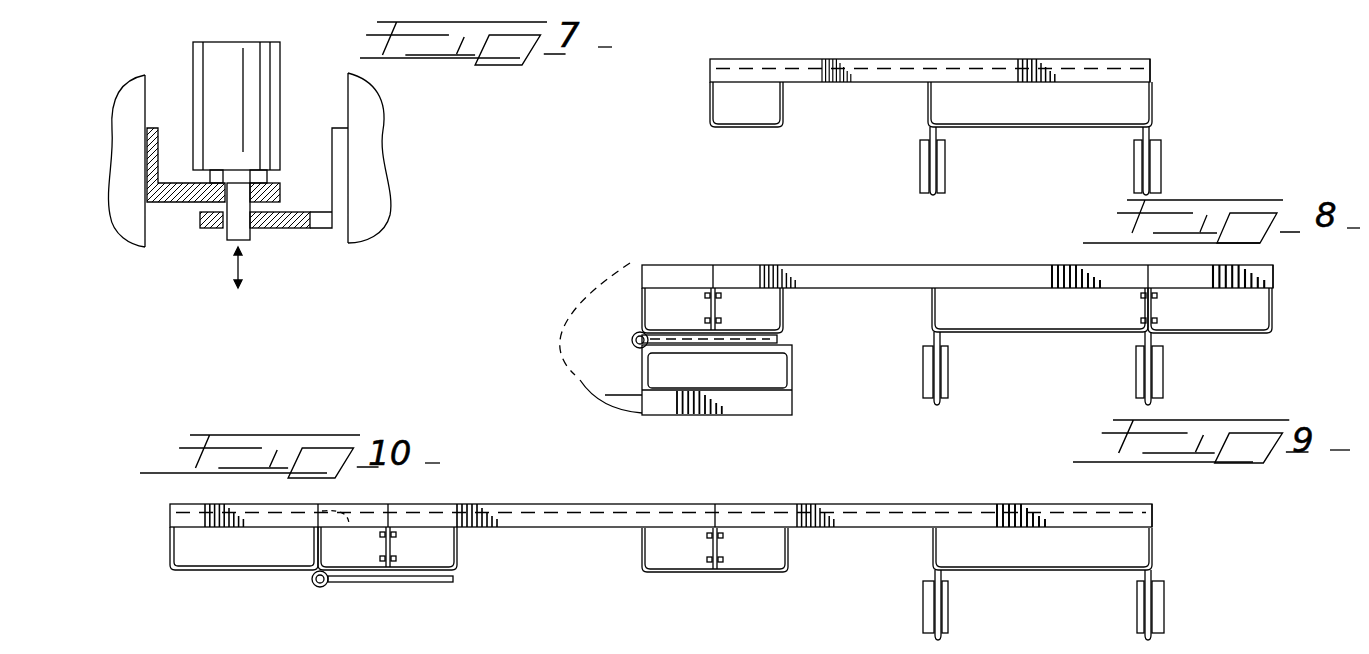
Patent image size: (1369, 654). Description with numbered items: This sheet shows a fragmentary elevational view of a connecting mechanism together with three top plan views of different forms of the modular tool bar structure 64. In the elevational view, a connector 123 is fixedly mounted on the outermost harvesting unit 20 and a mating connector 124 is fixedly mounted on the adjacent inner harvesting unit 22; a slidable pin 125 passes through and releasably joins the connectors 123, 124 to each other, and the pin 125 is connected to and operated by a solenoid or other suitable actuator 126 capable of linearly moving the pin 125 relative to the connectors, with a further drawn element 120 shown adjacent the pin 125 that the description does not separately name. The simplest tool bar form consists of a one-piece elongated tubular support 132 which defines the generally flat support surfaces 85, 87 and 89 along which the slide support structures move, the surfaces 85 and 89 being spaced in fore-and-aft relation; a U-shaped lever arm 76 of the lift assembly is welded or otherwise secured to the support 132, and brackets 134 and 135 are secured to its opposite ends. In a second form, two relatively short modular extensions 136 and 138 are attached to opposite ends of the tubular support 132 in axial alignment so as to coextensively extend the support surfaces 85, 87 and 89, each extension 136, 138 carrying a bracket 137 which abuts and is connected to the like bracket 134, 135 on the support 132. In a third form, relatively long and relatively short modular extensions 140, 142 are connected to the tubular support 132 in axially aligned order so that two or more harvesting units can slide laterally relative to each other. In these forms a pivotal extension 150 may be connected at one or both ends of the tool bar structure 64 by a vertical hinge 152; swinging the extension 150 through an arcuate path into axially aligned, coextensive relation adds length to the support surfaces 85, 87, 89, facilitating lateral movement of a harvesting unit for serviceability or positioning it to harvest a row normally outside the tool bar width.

In FIG. 7, the outermost harvesting unit 20 is at (132, 203).
In FIG. 7, the adjacent inner harvesting unit 22 is at (360, 192).
In FIG. 7, the pad block 120 is at (224, 233).
In FIG. 7, the connector 123 is at (150, 186).
In FIG. 7, the connector 124 is at (333, 222).
In FIG. 7, the slidable pin 125 is at (250, 237).
In FIG. 7, the actuator 126 is at (253, 118).
In FIG. 8, the tubular support 132 is at (870, 64).
In FIG. 9, the tubular support 132 is at (870, 280).
In FIG. 10, the tubular support 132 is at (980, 507).
In FIG. 8, the support surface 85 is at (1057, 62).
In FIG. 9, the support surface 85 is at (1045, 265).
In FIG. 10, the support surface 85 is at (197, 505).
In FIG. 8, the tool bar structure 64 is at (1150, 62).
In FIG. 9, the tool bar structure 64 is at (1273, 284).
In FIG. 10, the tool bar structure 64 is at (1154, 511).
In FIG. 8, the bracket 134 is at (1152, 104).
In FIG. 9, the bracket 134 is at (945, 310).
In FIG. 10, the bracket 134 is at (1042, 549).
In FIG. 8, the lever arm 76 is at (1158, 130).
In FIG. 9, the lever arm 76 is at (1150, 377).
In FIG. 10, the lever arm 76 is at (1043, 605).
In FIG. 8, the support surface 89 is at (850, 82).
In FIG. 9, the support surface 89 is at (990, 285).
In FIG. 10, the support surface 89 is at (285, 532).
In FIG. 8, the support surface 87 is at (903, 76).
In FIG. 9, the support surface 87 is at (908, 283).
In FIG. 10, the support surface 87 is at (245, 522).
In FIG. 8, the bracket 135 is at (743, 125).
In FIG. 9, the bracket 135 is at (785, 326).
In FIG. 9, the modular extension 138 is at (635, 282).
In FIG. 9, the bracket 137 is at (642, 310).
In FIG. 9, the vertical hinge 152 is at (634, 345).
In FIG. 10, the vertical hinge 152 is at (323, 586).
In FIG. 9, the pivotal extension 150 is at (758, 415).
In FIG. 10, the pivotal extension 150 is at (180, 522).
In FIG. 9, the modular extension 136 is at (1274, 273).
In FIG. 10, the modular extension 142 is at (358, 511).
In FIG. 10, the modular extension 140 is at (560, 512).